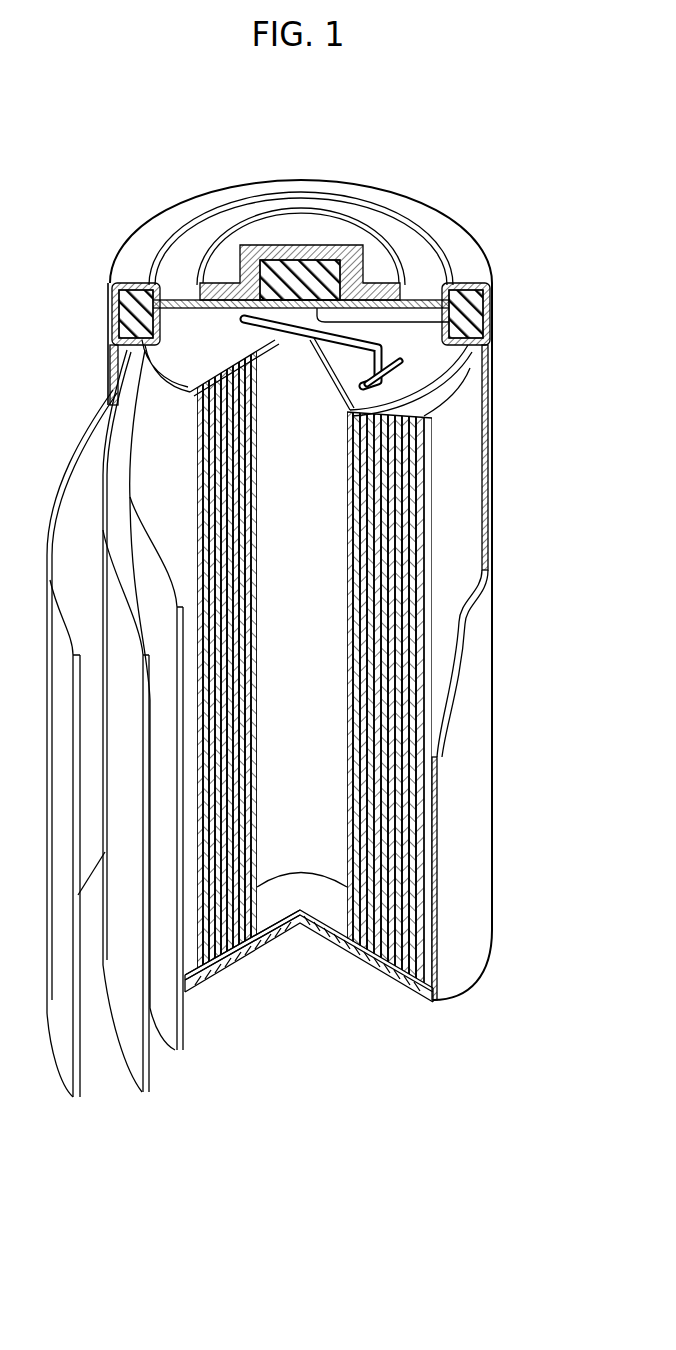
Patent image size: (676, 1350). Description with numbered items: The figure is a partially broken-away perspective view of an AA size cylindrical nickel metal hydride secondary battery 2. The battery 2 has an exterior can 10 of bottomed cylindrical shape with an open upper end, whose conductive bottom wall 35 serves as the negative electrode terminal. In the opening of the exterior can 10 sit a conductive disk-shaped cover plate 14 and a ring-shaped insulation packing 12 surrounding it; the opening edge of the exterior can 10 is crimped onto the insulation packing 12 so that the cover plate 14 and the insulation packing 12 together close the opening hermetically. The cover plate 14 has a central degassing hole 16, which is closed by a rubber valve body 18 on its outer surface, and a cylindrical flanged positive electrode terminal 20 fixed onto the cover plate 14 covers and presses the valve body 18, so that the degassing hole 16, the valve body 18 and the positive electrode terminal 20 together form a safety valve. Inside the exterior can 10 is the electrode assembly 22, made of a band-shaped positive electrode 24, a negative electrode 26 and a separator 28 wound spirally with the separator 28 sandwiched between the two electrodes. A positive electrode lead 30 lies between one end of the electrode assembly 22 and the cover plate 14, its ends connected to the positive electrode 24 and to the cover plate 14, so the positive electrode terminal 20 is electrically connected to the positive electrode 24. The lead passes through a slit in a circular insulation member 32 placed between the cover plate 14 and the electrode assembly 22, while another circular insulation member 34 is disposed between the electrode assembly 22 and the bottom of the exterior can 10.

The cylindrical battery 2 is at (465, 186).
The exterior can 10 is at (483, 628).
The insulation packing 12 is at (117, 313).
The cover plate 14 is at (185, 280).
The degassing hole 16 is at (487, 308).
The valve body 18 is at (277, 258).
The positive electrode terminal 20 is at (320, 222).
The electrode assembly 22 is at (473, 522).
The positive electrode 24 is at (183, 1038).
The negative electrode 26 is at (80, 1087).
The separator 28 is at (148, 1078).
The positive electrode lead 30 is at (440, 352).
The insulation member 32 is at (417, 370).
The insulation member 34 is at (320, 905).
The bottom wall 35 is at (252, 942).